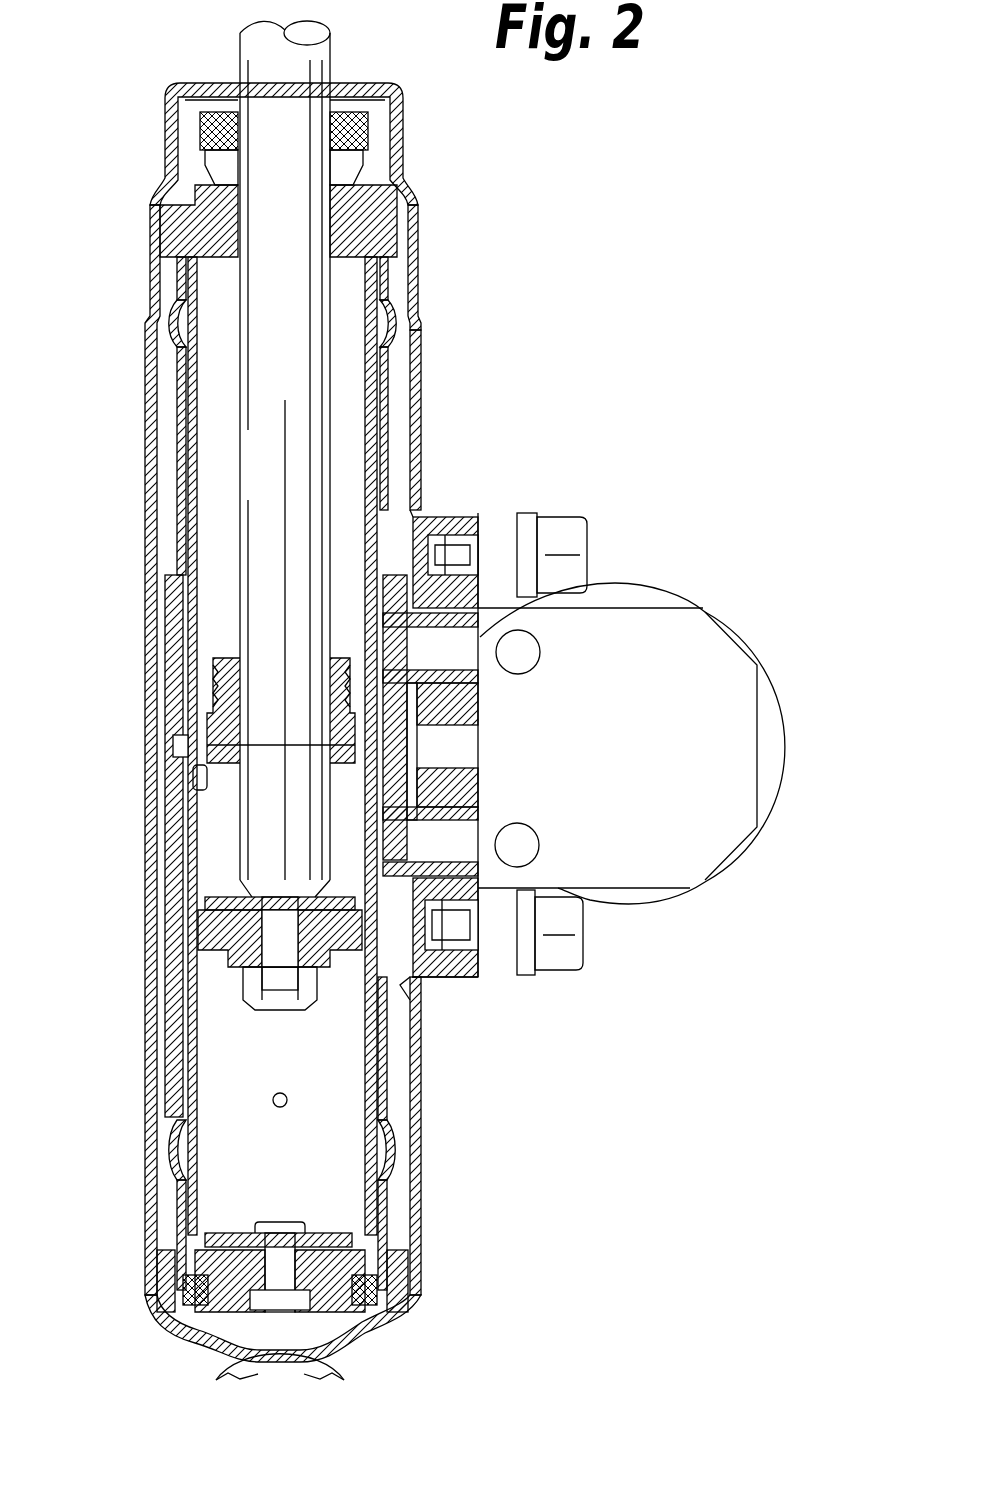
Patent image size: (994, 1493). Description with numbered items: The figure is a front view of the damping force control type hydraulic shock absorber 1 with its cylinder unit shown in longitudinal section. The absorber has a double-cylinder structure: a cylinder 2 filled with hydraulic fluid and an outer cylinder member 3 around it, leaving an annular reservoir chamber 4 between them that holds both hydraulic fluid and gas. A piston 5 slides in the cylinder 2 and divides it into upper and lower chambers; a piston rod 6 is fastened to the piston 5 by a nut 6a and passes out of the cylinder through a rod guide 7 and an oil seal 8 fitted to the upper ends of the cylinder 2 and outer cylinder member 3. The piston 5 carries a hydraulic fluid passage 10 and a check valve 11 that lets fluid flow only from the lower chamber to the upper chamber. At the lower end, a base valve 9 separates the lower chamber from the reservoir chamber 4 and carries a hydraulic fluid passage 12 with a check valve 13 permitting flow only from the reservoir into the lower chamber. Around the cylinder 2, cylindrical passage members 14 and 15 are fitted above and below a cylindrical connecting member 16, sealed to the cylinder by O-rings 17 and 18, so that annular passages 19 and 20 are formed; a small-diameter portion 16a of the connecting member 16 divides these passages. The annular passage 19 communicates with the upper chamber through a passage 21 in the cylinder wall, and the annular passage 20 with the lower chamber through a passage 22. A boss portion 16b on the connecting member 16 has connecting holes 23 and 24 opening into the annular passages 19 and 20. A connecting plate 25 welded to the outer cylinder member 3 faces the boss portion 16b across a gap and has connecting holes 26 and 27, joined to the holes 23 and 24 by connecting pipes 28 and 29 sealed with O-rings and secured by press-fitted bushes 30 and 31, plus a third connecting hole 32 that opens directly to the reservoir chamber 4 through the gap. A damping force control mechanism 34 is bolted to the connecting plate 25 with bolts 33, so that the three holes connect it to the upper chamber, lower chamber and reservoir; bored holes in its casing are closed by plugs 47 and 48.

The damping force control type hydraulic shock absorber 1 is at (622, 338).
The cylinder 2 is at (382, 265).
The outer cylinder member 3 is at (415, 295).
The reservoir chamber 4 is at (403, 380).
The piston 5 is at (205, 932).
The piston rod 6 is at (315, 65).
The nut 6a is at (247, 985).
The rod guide 7 is at (373, 182).
The oil seal 8 is at (373, 135).
The base valve 9 is at (313, 1228).
The hydraulic fluid passage 10 is at (255, 972).
The check valve 11 is at (187, 888).
The hydraulic fluid passage 12 is at (163, 1308).
The check valve 13 is at (187, 1243).
The passage member 14 is at (178, 418).
The passage member 15 is at (170, 1087).
The connecting member 16 is at (175, 695).
The small-diameter portion 16a is at (192, 788).
The boss portion 16b is at (417, 997).
The O-ring 17 is at (175, 317).
The O-ring 18 is at (167, 1153).
The annular passage 19 is at (378, 447).
The annular passage 20 is at (383, 1050).
The passage 21 is at (390, 353).
The passage 22 is at (380, 1108).
The connecting hole 23 is at (420, 595).
The connecting hole 24 is at (420, 858).
The connecting plate 25 is at (480, 513).
The connecting hole 26 is at (482, 615).
The connecting hole 27 is at (567, 945).
The connecting pipe 28 is at (570, 537).
The connecting pipe 29 is at (537, 973).
The bush 30 is at (466, 642).
The bush 31 is at (525, 843).
The connecting hole 32 is at (480, 752).
The bolt 33 is at (587, 525).
The damping force control mechanism 34 is at (729, 624).
The plug 47 is at (522, 650).
The plug 48 is at (495, 862).